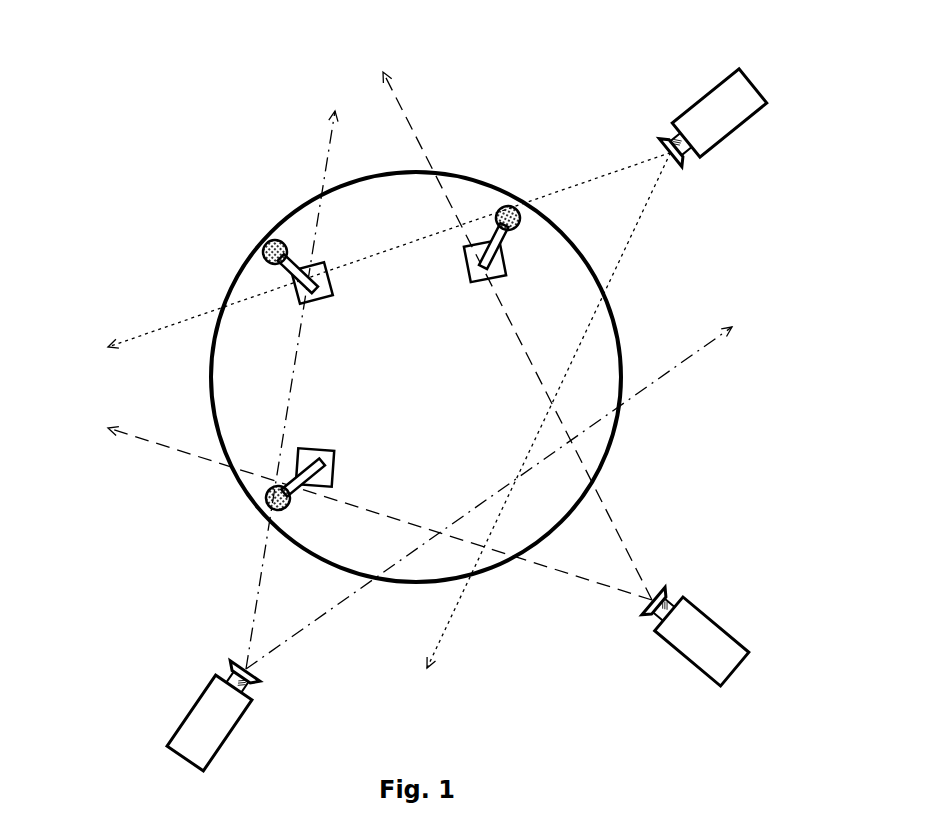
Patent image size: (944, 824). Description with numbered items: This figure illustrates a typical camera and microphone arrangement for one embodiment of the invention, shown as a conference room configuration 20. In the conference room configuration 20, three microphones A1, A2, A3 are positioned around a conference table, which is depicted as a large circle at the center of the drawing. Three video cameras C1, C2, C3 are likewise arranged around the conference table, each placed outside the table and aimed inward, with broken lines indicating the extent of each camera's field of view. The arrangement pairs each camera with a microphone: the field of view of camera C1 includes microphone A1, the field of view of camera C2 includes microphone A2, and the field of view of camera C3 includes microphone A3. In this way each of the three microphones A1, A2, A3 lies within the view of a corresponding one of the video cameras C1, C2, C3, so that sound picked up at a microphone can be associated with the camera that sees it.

The conference room configuration 20 is at (412, 359).
The video camera C1 is at (712, 132).
The video camera C2 is at (707, 625).
The video camera C3 is at (218, 725).
The microphone A1 is at (328, 478).
The microphone A2 is at (330, 288).
The microphone A3 is at (497, 260).